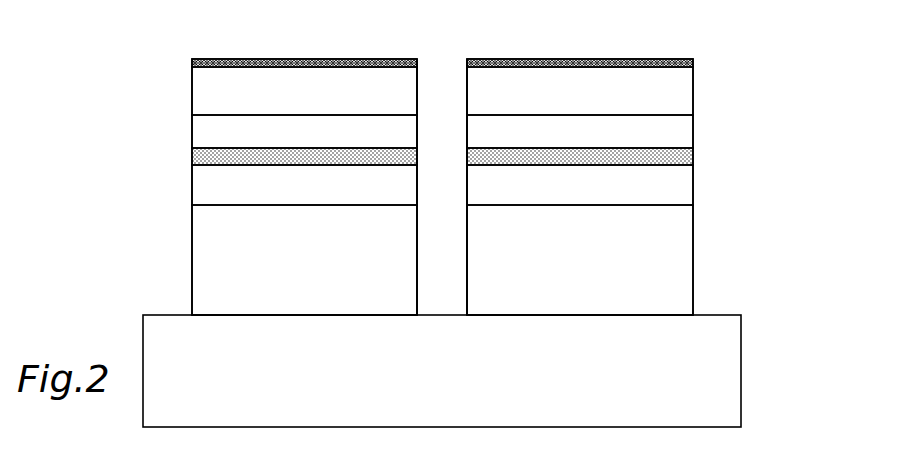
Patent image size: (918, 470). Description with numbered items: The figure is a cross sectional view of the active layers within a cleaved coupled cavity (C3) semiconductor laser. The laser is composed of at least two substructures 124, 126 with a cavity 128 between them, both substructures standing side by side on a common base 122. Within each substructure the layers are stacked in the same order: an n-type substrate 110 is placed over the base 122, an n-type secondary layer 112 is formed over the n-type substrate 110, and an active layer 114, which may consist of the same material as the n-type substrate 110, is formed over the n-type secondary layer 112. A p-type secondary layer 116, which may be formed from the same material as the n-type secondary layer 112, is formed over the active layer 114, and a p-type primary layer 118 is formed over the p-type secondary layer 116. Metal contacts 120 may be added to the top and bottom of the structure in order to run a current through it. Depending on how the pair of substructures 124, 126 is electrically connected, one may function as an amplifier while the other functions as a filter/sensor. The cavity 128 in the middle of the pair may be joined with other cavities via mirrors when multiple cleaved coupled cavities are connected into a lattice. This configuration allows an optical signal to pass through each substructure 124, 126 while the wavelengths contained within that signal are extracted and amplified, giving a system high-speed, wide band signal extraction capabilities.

The n-type substrate 110 is at (192, 240).
The n-type secondary layer 112 is at (192, 189).
The active layer 114 is at (192, 158).
The p-type secondary layer 116 is at (192, 136).
The p-type primary layer 118 is at (192, 96).
The metal contacts 120 is at (192, 65).
The base 122 is at (741, 392).
The substructure 124 is at (637, 50).
The substructure 126 is at (247, 50).
The cavity 128 is at (449, 50).